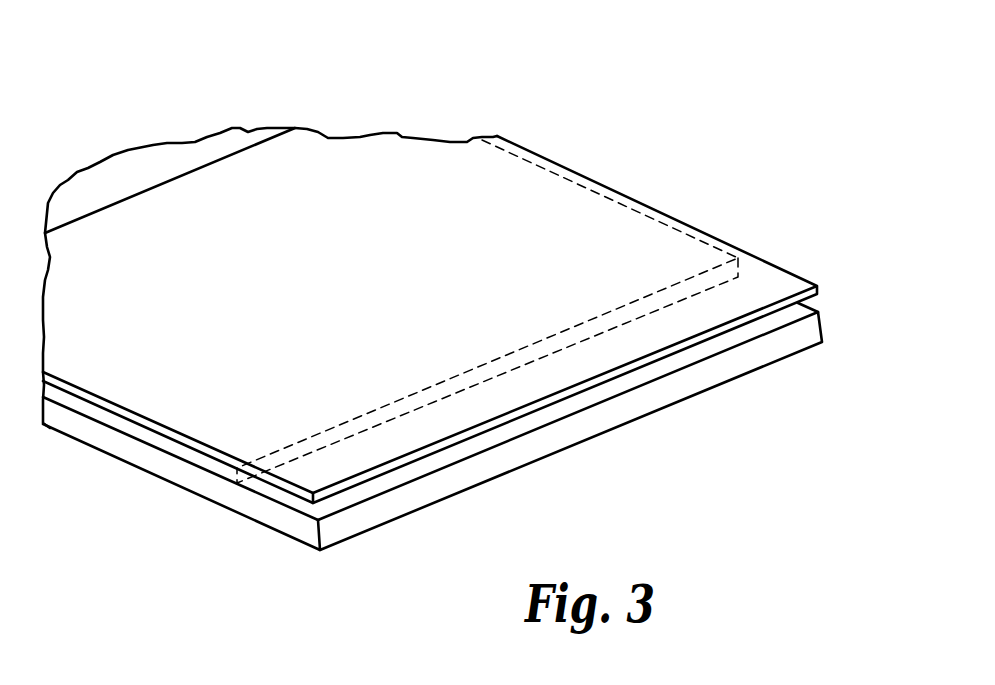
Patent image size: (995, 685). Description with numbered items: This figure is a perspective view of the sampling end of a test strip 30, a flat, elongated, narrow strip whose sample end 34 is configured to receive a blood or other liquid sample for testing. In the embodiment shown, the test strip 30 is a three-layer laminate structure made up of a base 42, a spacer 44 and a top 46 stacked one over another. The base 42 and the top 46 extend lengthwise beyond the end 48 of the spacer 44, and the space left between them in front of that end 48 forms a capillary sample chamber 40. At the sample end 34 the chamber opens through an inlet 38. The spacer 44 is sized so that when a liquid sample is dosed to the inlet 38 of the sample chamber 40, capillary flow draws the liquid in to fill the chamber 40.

The test strip 30 is at (466, 308).
The sample end 34 is at (693, 118).
The inlet 38 is at (758, 328).
The capillary sample chamber 40 is at (295, 507).
The base 42 is at (163, 465).
The spacer 44 is at (125, 425).
The top 46 is at (104, 404).
The end of spacer 48 is at (243, 477).